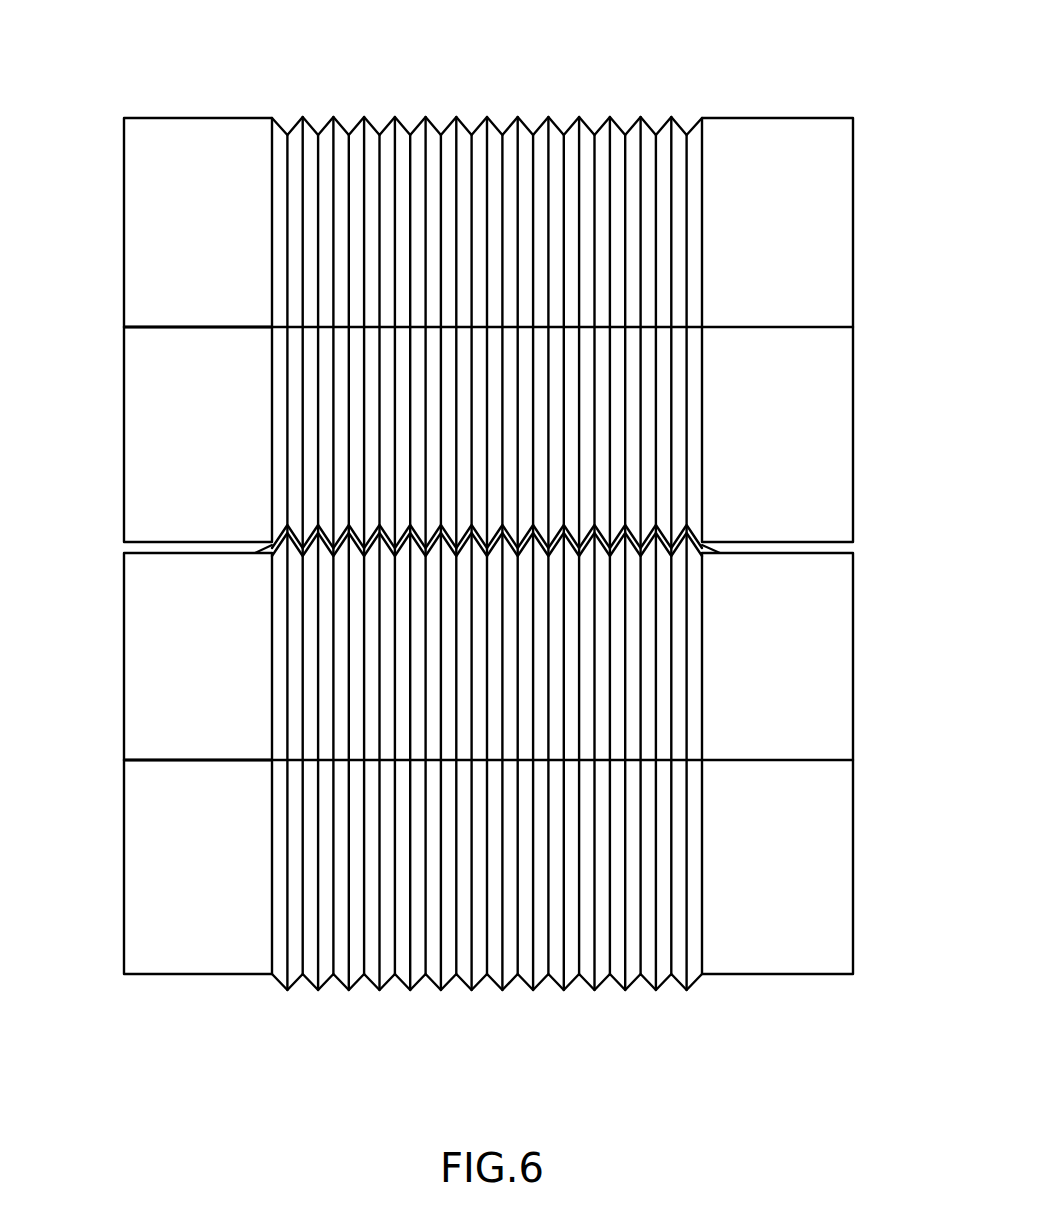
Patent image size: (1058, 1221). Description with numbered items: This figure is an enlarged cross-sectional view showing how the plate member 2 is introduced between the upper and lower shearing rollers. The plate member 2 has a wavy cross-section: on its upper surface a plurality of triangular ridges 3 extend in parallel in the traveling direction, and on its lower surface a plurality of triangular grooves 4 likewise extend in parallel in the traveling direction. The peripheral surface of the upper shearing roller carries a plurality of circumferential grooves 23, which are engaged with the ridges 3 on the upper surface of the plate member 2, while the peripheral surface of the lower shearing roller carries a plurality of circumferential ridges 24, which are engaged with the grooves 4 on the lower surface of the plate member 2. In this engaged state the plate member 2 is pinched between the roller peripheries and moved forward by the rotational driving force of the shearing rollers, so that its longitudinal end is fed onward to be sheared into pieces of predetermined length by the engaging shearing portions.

The plate member 2 is at (265, 545).
The ridges 3 is at (348, 524).
The grooves 4 is at (365, 558).
The grooves 23 is at (348, 132).
The ridges 24 is at (349, 991).